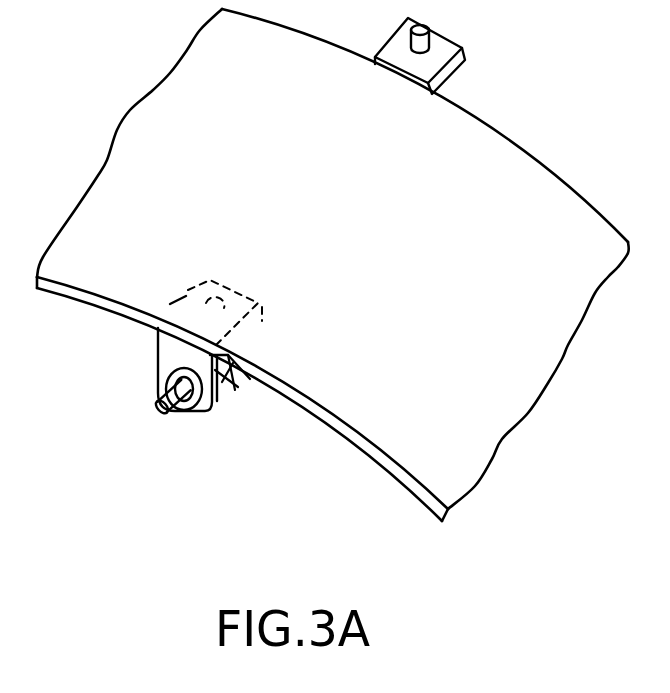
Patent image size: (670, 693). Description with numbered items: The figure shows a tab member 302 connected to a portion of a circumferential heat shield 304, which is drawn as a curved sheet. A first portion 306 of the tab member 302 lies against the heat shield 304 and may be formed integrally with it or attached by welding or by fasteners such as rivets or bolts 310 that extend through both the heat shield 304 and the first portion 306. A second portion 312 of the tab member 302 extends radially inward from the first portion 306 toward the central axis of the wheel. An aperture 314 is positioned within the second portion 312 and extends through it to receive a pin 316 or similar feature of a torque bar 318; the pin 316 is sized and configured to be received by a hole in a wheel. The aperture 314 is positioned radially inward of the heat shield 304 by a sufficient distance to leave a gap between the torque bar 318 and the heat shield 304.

The tab member 302 is at (210, 412).
The circumferential heat shield 304 is at (552, 359).
The first portion 306 is at (180, 302).
The rivets or bolts 310 is at (207, 309).
The second portion 312 is at (235, 390).
The aperture 314 is at (157, 374).
The pin 316 is at (153, 411).
The torque bar 318 is at (463, 58).